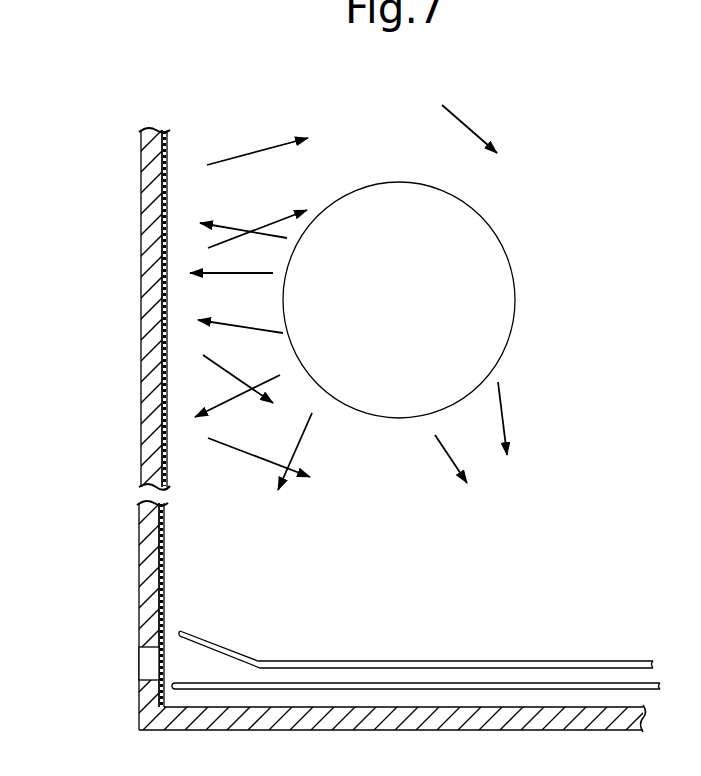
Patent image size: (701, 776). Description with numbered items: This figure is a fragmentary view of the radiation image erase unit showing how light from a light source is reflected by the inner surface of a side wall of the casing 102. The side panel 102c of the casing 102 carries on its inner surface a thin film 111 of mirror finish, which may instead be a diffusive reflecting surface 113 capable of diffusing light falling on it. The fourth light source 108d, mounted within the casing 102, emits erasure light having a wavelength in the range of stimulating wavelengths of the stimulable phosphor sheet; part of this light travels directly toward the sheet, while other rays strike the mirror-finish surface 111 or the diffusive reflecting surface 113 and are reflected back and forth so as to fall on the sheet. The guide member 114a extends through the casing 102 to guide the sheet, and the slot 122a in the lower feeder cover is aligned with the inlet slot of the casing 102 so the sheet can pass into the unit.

The casing 102 is at (143, 273).
The side panel 102c is at (153, 388).
The fourth light source 108d is at (448, 275).
The thin film of mirror finish 111 is at (164, 552).
The diffusive reflecting surface 113 is at (232, 605).
The guide member 114a is at (345, 662).
The slot 122a is at (143, 653).